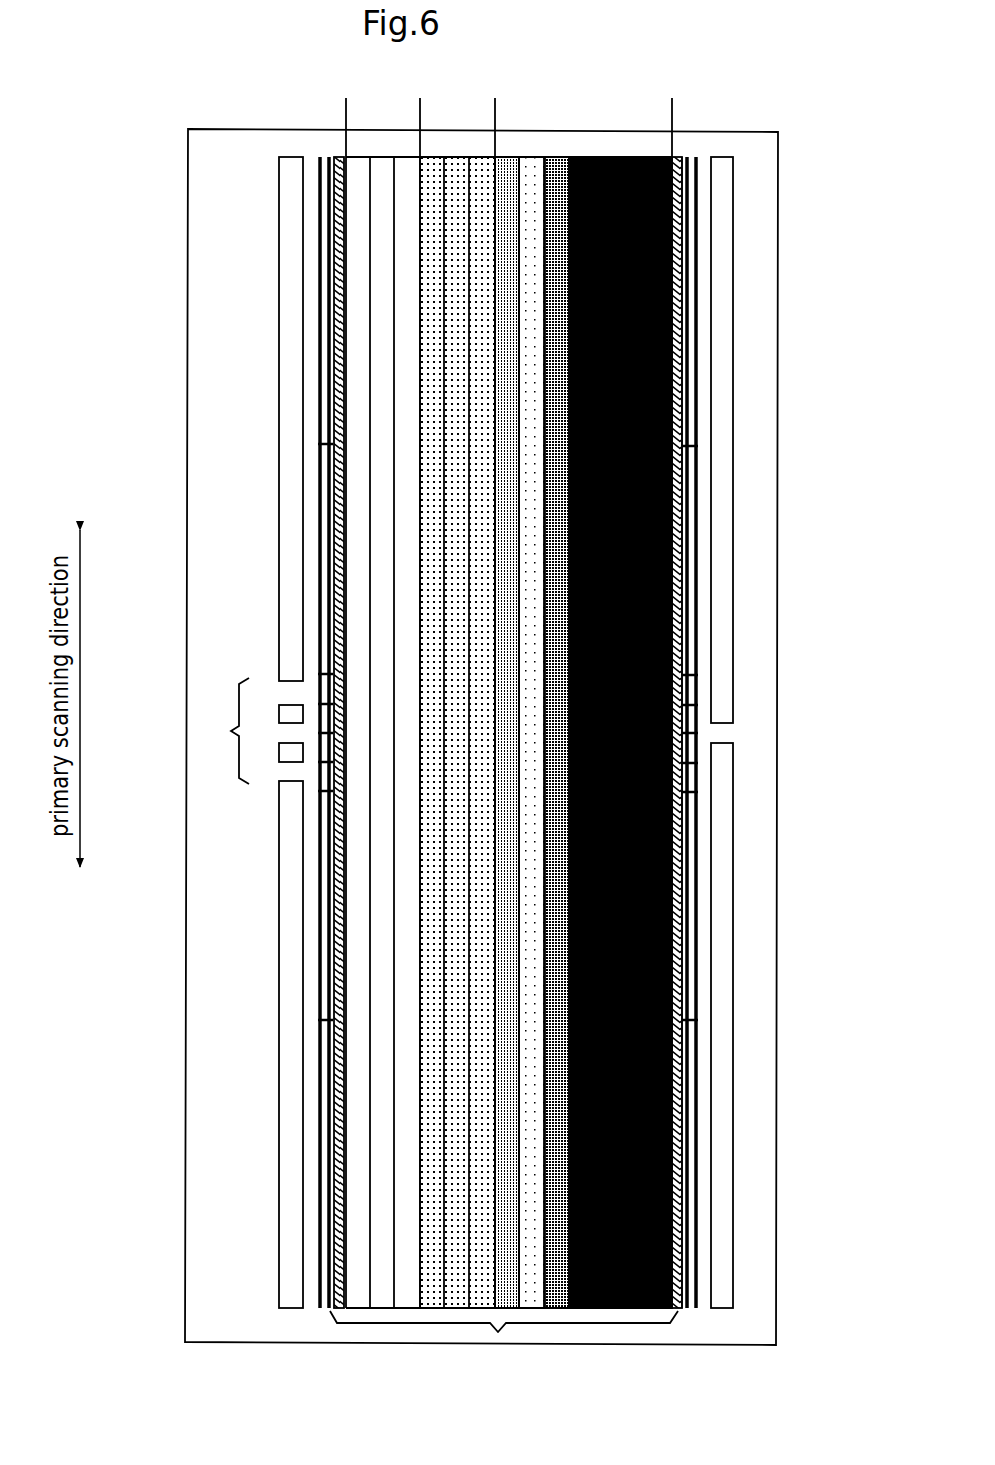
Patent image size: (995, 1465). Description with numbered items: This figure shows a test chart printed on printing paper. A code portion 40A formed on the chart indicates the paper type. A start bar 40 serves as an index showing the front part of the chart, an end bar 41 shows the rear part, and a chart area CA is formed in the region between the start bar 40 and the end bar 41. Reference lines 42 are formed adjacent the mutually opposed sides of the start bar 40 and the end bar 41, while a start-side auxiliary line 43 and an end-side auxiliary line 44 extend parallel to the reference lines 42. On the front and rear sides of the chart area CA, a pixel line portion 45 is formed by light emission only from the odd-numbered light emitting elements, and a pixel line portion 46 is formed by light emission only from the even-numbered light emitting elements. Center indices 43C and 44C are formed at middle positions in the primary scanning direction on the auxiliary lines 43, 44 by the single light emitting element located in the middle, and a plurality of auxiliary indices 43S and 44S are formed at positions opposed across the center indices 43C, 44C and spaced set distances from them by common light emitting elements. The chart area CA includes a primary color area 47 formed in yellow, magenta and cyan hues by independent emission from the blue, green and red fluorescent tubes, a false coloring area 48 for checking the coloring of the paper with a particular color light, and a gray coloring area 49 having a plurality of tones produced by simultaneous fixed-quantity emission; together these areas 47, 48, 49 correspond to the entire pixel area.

The start bar 40 is at (276, 515).
The code portion 40A is at (231, 731).
The end bar 41 is at (725, 575).
The reference lines 42 is at (318, 380).
The start-side auxiliary line 43 is at (329, 171).
The auxiliary indices 43S is at (318, 452).
The center index 43C is at (320, 733).
The end-side auxiliary line 44 is at (688, 508).
The auxiliary indices 44S is at (697, 446).
The center index 44C is at (690, 733).
The pixel line portion 45 is at (334, 297).
The pixel line portion 46 is at (683, 243).
The primary color area 47 is at (418, 110).
The false coloring area 48 is at (493, 110).
The gray coloring area 49 is at (670, 110).
The chart area CA is at (498, 1332).